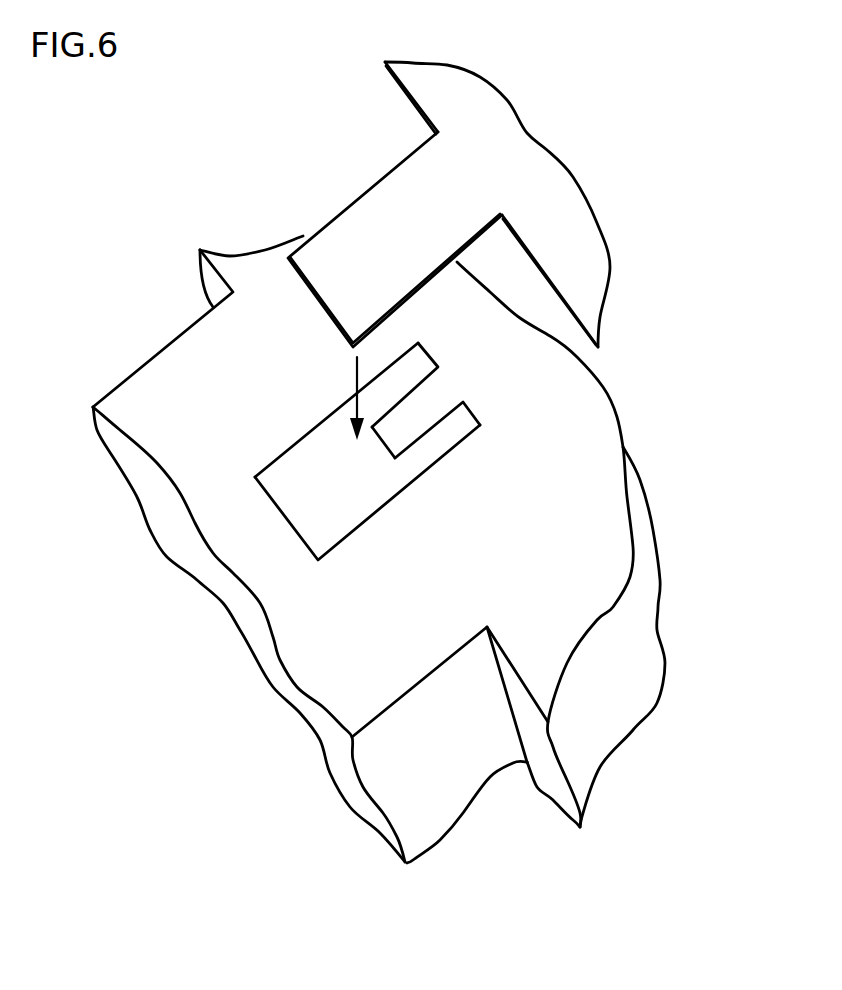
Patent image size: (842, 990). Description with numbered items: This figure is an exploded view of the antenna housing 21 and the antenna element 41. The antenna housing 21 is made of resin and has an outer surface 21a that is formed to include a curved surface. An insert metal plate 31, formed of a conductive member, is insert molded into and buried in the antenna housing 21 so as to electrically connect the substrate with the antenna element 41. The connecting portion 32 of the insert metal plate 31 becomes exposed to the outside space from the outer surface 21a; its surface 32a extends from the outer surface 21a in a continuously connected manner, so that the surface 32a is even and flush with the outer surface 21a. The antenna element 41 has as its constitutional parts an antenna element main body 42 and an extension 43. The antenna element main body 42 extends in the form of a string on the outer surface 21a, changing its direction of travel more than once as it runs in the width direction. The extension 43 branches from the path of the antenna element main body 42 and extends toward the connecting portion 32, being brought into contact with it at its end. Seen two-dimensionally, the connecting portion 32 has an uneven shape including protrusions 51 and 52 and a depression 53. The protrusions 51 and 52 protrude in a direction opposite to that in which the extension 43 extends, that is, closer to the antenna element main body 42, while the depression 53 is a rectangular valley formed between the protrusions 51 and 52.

The antenna housing 21 is at (372, 550).
The outer surface 21a is at (167, 383).
The insert metal plate 31 is at (360, 517).
The connecting portion 32 is at (360, 463).
The surface 32a is at (298, 471).
The antenna element 41 is at (449, 204).
The antenna element main body 42 is at (447, 100).
The extension 43 is at (423, 185).
The protrusion 51 is at (418, 362).
The protrusion 52 is at (463, 420).
The depression 53 is at (422, 383).